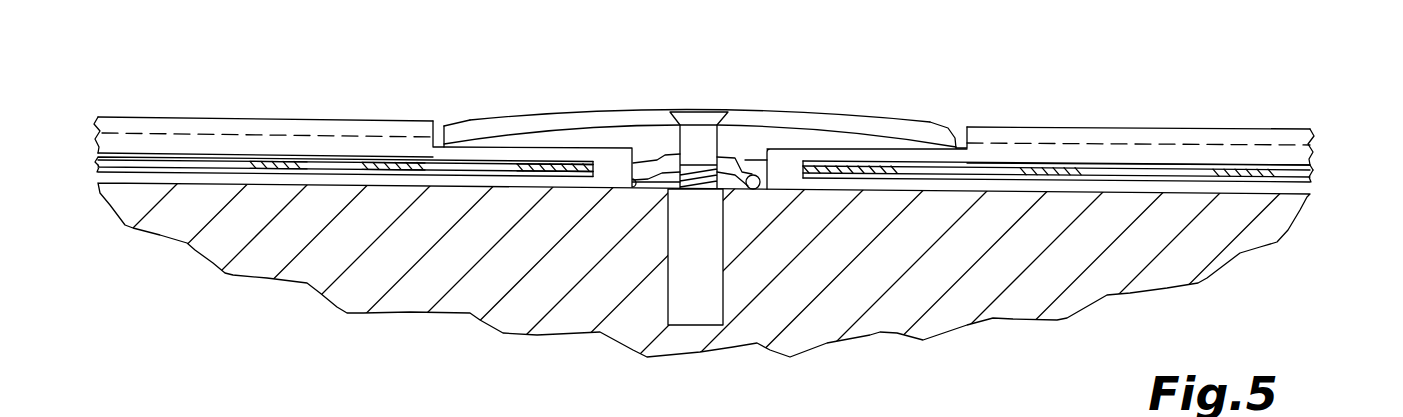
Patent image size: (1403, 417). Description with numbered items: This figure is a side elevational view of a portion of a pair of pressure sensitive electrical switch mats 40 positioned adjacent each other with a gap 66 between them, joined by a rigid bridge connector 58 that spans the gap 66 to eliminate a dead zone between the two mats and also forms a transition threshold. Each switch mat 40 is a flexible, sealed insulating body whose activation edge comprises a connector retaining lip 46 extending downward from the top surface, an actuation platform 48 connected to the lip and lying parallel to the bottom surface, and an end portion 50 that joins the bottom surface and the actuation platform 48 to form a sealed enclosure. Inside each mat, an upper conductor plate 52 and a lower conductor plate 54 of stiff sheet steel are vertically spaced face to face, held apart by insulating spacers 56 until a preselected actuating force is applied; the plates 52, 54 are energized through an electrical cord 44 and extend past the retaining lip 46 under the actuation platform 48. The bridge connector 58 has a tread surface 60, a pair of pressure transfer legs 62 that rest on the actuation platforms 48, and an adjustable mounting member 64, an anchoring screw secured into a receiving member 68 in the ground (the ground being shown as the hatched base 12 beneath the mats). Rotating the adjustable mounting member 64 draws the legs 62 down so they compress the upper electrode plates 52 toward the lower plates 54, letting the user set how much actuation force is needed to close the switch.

The base substrate 12 is at (955, 172).
The pressure sensitive electrical switch mat 40 is at (228, 113).
The electrical cord 44 is at (739, 188).
The connector retaining lip 46 is at (440, 118).
The actuation platform 48 is at (825, 147).
The end portion 50 is at (633, 188).
The upper conductor plate 52 is at (97, 150).
The lower conductor plate 54 is at (97, 176).
The spacers 56 is at (262, 169).
The bridge connector 58 is at (790, 100).
The tread surface 60 is at (690, 103).
The pressure transfer legs 62 is at (466, 115).
The adjustable mounting member 64 is at (647, 195).
The gap 66 is at (736, 150).
The receiving member 68 is at (705, 296).